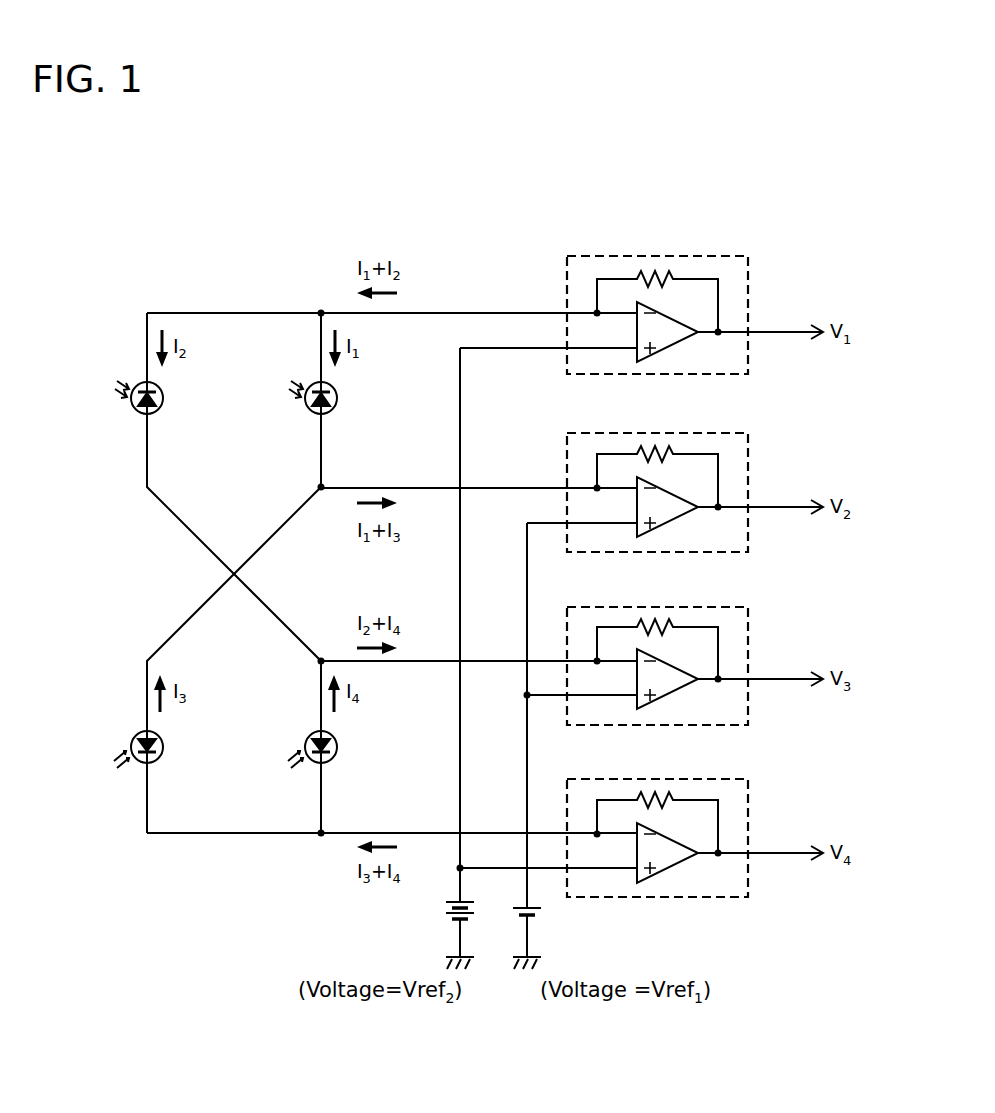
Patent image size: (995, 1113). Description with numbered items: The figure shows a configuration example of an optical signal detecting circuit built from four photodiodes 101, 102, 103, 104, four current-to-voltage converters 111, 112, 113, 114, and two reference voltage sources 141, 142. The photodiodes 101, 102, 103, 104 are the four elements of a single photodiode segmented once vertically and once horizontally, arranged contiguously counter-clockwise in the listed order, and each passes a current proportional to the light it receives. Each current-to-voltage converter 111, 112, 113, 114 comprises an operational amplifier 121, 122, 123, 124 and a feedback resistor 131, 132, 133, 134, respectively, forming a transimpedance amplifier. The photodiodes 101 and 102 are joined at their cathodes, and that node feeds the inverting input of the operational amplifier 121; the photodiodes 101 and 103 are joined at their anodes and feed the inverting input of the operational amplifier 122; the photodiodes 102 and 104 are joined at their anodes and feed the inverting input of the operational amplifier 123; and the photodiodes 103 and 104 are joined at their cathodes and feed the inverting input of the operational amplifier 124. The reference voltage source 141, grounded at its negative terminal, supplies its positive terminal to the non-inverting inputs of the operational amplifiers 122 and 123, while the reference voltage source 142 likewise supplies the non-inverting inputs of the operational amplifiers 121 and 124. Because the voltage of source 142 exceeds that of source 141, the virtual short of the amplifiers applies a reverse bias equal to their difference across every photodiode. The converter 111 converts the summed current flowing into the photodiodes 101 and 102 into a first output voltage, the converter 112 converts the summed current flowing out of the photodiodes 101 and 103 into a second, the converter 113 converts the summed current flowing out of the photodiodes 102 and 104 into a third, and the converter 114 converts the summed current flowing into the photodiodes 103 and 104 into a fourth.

The photodiode 101 is at (332, 410).
The photodiode 102 is at (158, 410).
The photodiode 103 is at (158, 757).
The photodiode 104 is at (332, 757).
The current-to-voltage converter 111 is at (695, 319).
The current-to-voltage converter 112 is at (695, 494).
The current-to-voltage converter 113 is at (695, 666).
The current-to-voltage converter 114 is at (695, 841).
The operational amplifier 121 is at (657, 335).
The operational amplifier 122 is at (657, 510).
The operational amplifier 123 is at (657, 682).
The operational amplifier 124 is at (657, 854).
The feedback resistor 131 is at (670, 282).
The feedback resistor 132 is at (670, 457).
The feedback resistor 133 is at (670, 629).
The feedback resistor 134 is at (670, 801).
The reference voltage source 141 is at (545, 911).
The reference voltage source 142 is at (443, 912).